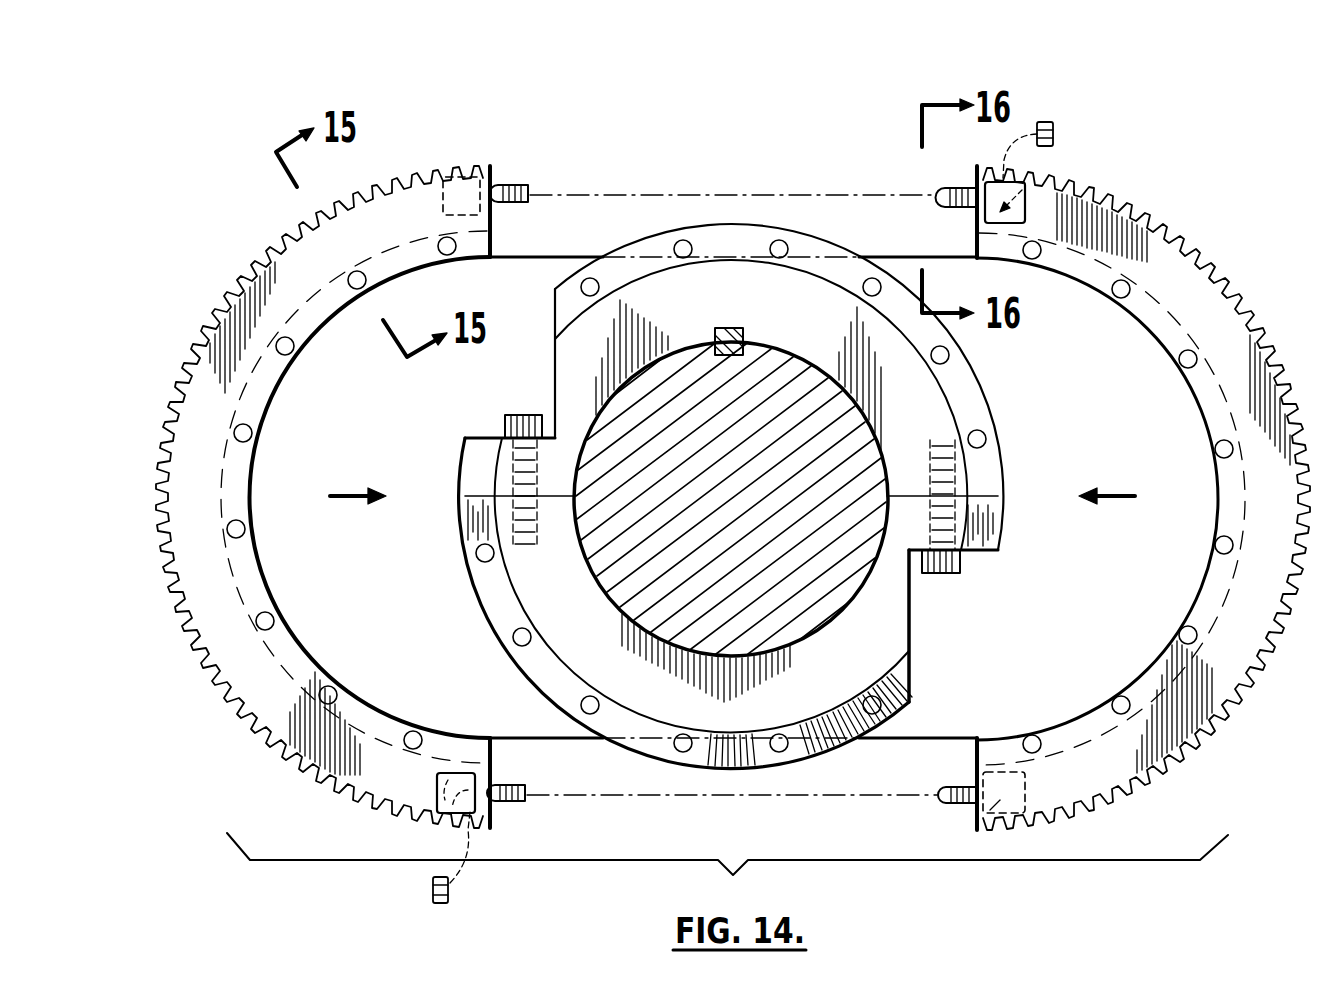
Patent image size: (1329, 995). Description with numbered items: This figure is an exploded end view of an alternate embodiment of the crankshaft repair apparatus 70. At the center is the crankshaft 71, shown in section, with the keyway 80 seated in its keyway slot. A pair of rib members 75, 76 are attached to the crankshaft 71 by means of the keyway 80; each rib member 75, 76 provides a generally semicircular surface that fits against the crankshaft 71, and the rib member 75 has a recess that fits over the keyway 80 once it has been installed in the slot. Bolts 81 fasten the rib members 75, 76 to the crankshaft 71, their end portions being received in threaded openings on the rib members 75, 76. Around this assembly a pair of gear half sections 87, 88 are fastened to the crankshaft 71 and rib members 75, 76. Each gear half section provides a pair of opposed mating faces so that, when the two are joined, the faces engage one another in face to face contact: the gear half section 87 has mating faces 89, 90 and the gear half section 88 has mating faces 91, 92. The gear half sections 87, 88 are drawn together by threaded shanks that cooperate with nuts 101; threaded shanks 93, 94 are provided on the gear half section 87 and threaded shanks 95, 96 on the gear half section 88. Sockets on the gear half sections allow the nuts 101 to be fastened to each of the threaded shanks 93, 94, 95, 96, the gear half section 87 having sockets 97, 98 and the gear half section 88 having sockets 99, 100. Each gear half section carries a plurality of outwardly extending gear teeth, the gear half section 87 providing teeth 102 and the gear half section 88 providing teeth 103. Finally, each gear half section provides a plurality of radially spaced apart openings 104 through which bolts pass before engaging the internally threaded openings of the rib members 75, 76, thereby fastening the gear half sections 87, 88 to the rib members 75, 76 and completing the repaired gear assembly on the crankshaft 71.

The crankshaft repair apparatus 70 is at (1145, 148).
The crankshaft 71 is at (688, 360).
The rib member 75 is at (647, 238).
The rib member 76 is at (610, 745).
The keyway 80 is at (740, 328).
The bolt 81 is at (528, 415).
The gear half section 87 is at (290, 245).
The gear half section 88 is at (1118, 215).
The mating face 89 is at (493, 172).
The mating face 90 is at (492, 740).
The mating face 91 is at (918, 205).
The mating face 92 is at (975, 762).
The threaded shank 93 is at (523, 185).
The threaded shank 94 is at (514, 801).
The threaded shank 95 is at (950, 208).
The threaded shank 96 is at (936, 800).
The socket 97 is at (477, 162).
The socket 98 is at (437, 800).
The socket 99 is at (1012, 200).
The socket 100 is at (980, 815).
The nut 101 is at (1047, 120).
The gear teeth 102 is at (268, 740).
The gear teeth 103 is at (1258, 680).
The radially spaced apart openings 104 is at (1180, 365).